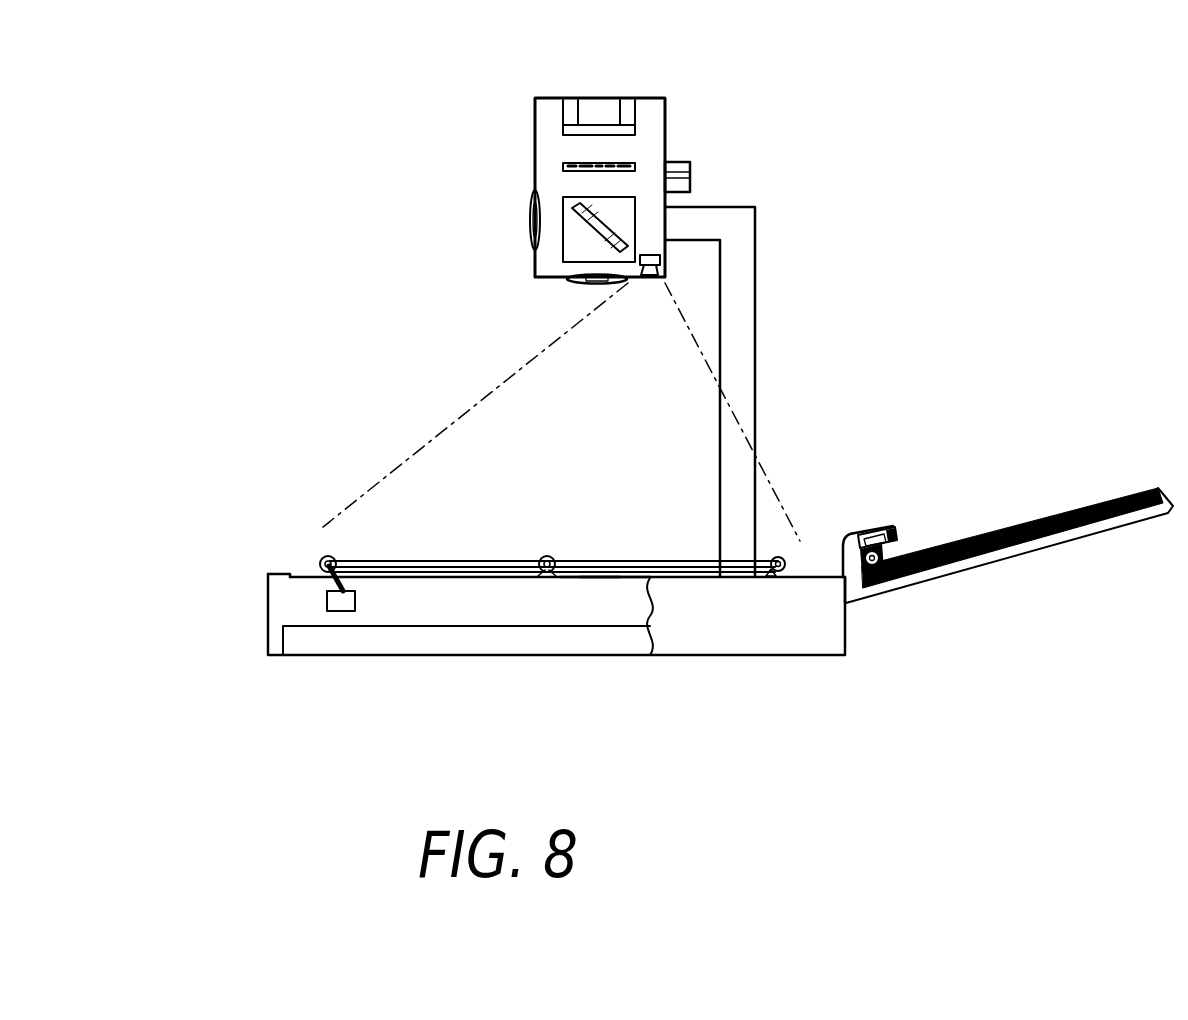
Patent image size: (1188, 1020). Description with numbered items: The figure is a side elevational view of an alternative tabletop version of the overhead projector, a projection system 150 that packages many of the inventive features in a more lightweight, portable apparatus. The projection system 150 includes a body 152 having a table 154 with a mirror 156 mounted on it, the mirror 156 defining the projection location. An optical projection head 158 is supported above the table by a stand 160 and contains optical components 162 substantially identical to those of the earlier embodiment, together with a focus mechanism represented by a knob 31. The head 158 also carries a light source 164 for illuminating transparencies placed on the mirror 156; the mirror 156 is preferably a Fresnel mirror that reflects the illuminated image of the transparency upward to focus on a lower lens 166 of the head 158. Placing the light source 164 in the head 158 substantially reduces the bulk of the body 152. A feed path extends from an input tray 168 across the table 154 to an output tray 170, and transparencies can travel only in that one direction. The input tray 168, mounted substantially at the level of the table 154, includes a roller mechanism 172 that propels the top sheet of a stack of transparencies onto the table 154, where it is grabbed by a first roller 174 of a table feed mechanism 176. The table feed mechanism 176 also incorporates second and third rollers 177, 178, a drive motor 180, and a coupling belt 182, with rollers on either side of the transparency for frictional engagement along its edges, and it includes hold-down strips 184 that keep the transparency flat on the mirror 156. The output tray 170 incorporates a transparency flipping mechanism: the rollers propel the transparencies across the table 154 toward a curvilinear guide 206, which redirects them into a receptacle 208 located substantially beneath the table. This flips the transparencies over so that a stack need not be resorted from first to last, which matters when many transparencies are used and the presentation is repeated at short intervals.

The projection system 150 is at (185, 160).
The optical projection head 158 is at (652, 88).
The optical components 162 is at (542, 178).
The lower lens 166 is at (566, 280).
The light source 164 is at (645, 277).
The knob 31 is at (688, 161).
The stand 160 is at (756, 345).
The table feed mechanism 176 is at (408, 516).
The output tray 170 is at (190, 632).
The body 152 is at (740, 658).
The curvilinear guide 206 is at (287, 560).
The receptacle 208 is at (425, 641).
The hold-down strips 184 is at (607, 580).
The coupling belt 182 is at (598, 576).
The mirror 156 is at (563, 580).
The third roller 178 is at (325, 556).
The drive motor 180 is at (341, 612).
The second roller 177 is at (548, 556).
The first roller 174 is at (780, 555).
The table 154 is at (823, 573).
The input tray 168 is at (1022, 545).
The roller mechanism 172 is at (905, 513).